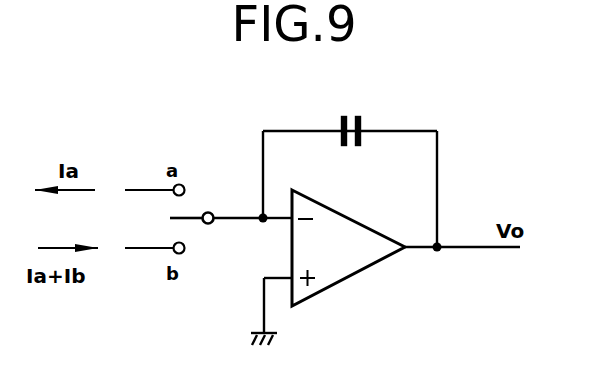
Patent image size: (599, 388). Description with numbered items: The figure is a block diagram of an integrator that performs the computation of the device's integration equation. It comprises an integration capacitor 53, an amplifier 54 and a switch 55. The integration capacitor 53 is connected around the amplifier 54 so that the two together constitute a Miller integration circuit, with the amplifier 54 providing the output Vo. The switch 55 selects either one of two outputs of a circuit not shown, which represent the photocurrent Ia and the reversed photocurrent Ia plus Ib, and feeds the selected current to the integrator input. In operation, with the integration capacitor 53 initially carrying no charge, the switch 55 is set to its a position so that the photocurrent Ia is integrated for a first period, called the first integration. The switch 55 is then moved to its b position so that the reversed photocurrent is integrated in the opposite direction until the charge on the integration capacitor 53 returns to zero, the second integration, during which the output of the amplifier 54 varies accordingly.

The integration capacitor 53 is at (352, 117).
The amplifier 54 is at (365, 270).
The switch 55 is at (187, 227).